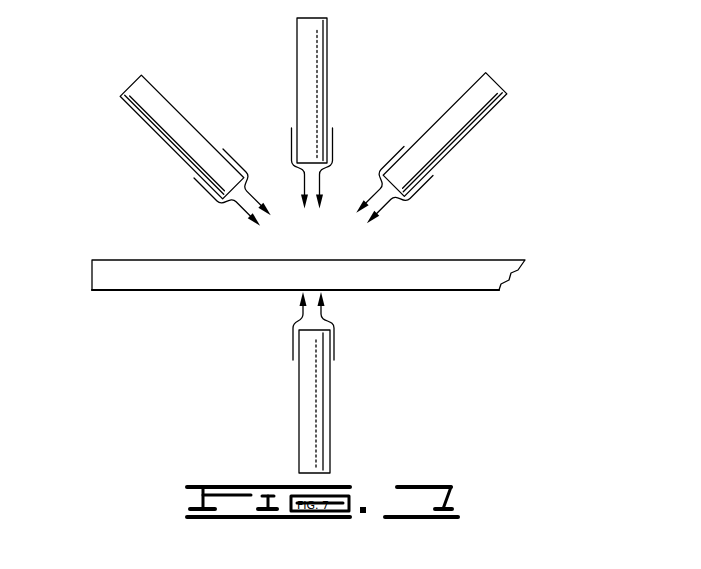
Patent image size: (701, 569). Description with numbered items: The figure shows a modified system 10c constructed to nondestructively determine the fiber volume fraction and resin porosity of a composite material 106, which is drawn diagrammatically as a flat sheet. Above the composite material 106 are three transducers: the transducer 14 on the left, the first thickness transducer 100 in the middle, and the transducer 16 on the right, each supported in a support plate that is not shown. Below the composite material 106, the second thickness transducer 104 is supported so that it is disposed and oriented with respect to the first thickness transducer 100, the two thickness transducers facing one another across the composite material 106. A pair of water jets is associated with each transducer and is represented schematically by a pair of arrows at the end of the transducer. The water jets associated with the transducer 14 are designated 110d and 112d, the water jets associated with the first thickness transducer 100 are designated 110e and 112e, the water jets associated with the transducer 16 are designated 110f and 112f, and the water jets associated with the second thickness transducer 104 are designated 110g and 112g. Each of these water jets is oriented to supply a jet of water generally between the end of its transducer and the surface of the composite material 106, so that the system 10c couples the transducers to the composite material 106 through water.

The modified system 10c is at (537, 42).
The transducer 14 is at (136, 102).
The transducer 16 is at (468, 110).
The first thickness transducer 100 is at (316, 52).
The second thickness transducer 104 is at (315, 408).
The composite material 106 is at (460, 270).
The water jet 110d is at (210, 192).
The water jet 110e is at (291, 131).
The water jet 110f is at (384, 175).
The water jet 110g is at (293, 352).
The water jet 112d is at (228, 152).
The water jet 112e is at (333, 131).
The water jet 112f is at (428, 176).
The water jet 112g is at (335, 343).